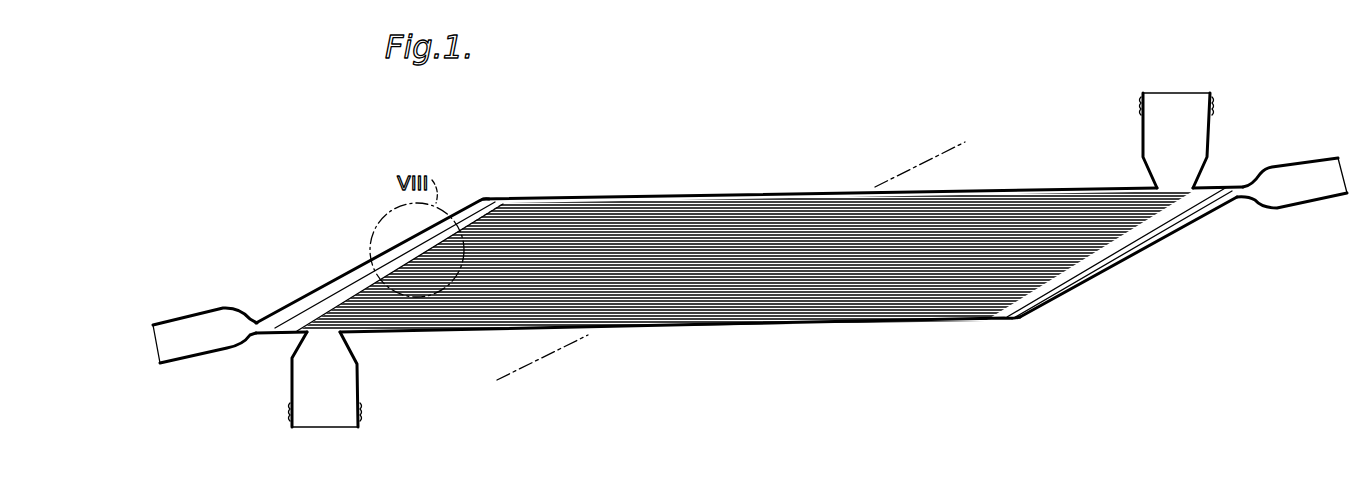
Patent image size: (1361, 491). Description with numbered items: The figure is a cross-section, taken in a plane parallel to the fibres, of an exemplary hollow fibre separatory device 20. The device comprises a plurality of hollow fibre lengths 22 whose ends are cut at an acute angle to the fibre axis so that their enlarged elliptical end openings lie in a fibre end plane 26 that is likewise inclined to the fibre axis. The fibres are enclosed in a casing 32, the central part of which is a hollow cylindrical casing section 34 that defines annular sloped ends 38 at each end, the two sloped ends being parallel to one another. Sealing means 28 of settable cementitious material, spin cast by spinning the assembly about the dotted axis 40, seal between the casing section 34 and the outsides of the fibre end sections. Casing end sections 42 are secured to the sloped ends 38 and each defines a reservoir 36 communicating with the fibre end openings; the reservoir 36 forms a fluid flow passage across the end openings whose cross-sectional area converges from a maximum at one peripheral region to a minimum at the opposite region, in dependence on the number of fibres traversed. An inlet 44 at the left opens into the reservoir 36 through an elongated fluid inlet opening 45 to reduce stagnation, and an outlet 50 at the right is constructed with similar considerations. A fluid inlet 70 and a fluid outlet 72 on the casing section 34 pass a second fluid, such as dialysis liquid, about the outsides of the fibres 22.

The hollow fibre separatory device 20 is at (690, 134).
The hollow fibre lengths 22 is at (720, 220).
The fibre end plane 26 is at (347, 280).
The sealing means 28 is at (321, 304).
The casing 32 is at (598, 192).
The casing section 34 is at (663, 198).
The reservoir 36 is at (284, 318).
The sloped ends 38 is at (487, 193).
The spinning axis 40 is at (912, 163).
The casing end sections 42 is at (358, 263).
The inlet 44 is at (187, 348).
The fluid inlet opening 45 is at (257, 322).
The outlet 50 is at (1297, 196).
The fluid inlet 70 is at (1140, 138).
The fluid outlet 72 is at (360, 390).